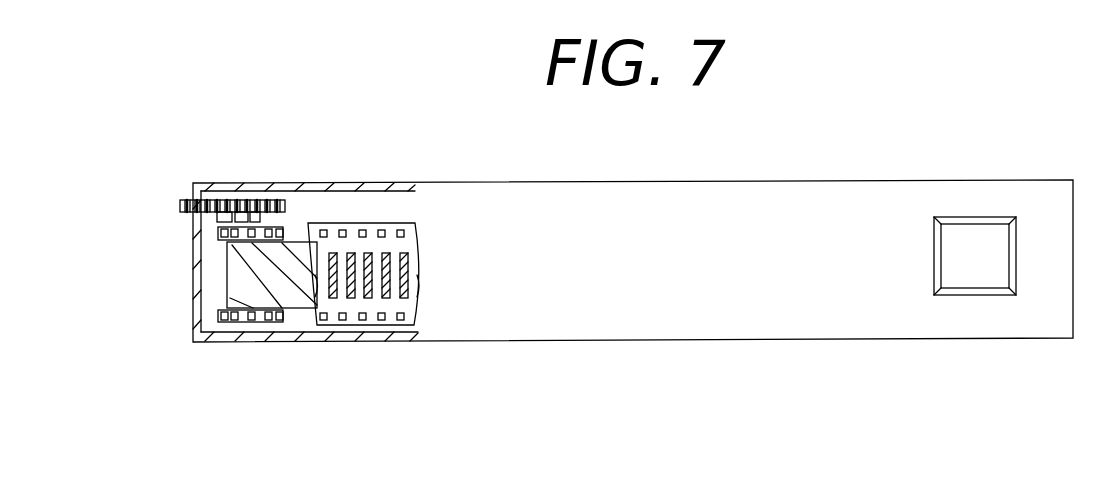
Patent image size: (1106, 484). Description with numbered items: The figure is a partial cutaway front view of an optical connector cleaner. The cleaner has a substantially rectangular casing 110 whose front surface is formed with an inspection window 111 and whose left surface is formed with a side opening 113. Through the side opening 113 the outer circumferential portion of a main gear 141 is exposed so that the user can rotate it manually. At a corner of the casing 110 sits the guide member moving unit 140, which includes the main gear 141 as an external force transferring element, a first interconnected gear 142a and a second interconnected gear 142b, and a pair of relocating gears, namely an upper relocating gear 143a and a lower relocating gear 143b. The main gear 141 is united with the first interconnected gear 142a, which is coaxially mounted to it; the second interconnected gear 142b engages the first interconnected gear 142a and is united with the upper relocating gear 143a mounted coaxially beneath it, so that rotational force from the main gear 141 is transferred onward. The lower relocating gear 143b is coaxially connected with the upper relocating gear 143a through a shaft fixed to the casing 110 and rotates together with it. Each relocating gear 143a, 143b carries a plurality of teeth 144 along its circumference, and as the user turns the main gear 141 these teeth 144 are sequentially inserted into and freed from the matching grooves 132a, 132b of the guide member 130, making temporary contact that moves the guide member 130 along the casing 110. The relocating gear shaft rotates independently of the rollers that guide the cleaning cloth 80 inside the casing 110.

The cleaning cloth 80 is at (240, 285).
The casing 110 is at (227, 195).
The inspection window 111 is at (972, 263).
The side opening 113 is at (212, 216).
The guide member 130 is at (410, 242).
The matching groove 132a is at (400, 230).
The matching groove 132b is at (383, 322).
The guide member moving unit 140 is at (172, 175).
The main gear 141 is at (182, 200).
The first interconnected gear 142a is at (215, 222).
The second interconnected gear 142b is at (290, 226).
The upper relocating gear 143a is at (235, 252).
The lower relocating gear 143b is at (238, 322).
The teeth 144 is at (283, 322).